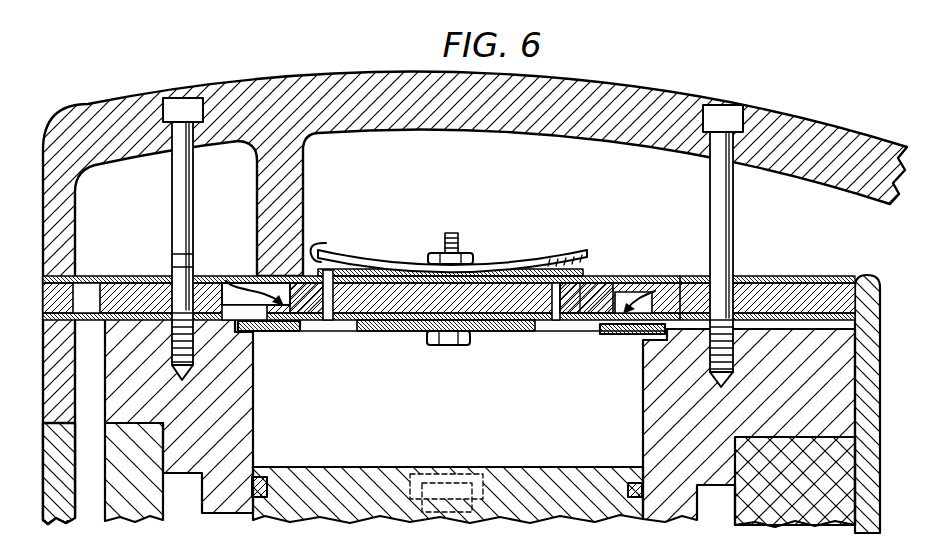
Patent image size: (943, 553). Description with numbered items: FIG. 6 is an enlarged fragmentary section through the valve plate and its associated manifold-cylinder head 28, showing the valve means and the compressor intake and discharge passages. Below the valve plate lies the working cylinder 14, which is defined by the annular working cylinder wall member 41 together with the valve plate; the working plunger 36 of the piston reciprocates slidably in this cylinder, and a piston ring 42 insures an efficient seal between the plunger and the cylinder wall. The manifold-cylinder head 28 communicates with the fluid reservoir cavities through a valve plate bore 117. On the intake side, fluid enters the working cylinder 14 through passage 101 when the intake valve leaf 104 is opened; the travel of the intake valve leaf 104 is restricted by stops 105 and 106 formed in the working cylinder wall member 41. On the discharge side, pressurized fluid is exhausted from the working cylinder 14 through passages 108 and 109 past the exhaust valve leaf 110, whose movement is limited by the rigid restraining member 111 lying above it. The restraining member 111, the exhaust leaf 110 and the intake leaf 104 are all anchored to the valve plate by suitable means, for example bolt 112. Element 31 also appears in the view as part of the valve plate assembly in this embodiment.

The manifold-cylinder head 28 is at (412, 130).
The valve plate bore 117 is at (95, 276).
The passage 101 is at (239, 276).
The exhaust valve leaf 110 is at (327, 244).
The bolt 112 is at (470, 250).
The rigid restraining member 111 is at (548, 266).
The top plate 31 is at (763, 277).
The stop 105 is at (262, 333).
The passage 108 is at (333, 306).
The intake valve leaf 104 is at (411, 333).
The working plunger 36 is at (436, 460).
The passage 109 is at (560, 332).
The stop 106 is at (633, 338).
The working cylinder wall member 41 is at (203, 411).
The piston ring 42 is at (262, 484).
The working cylinder 14 is at (549, 443).